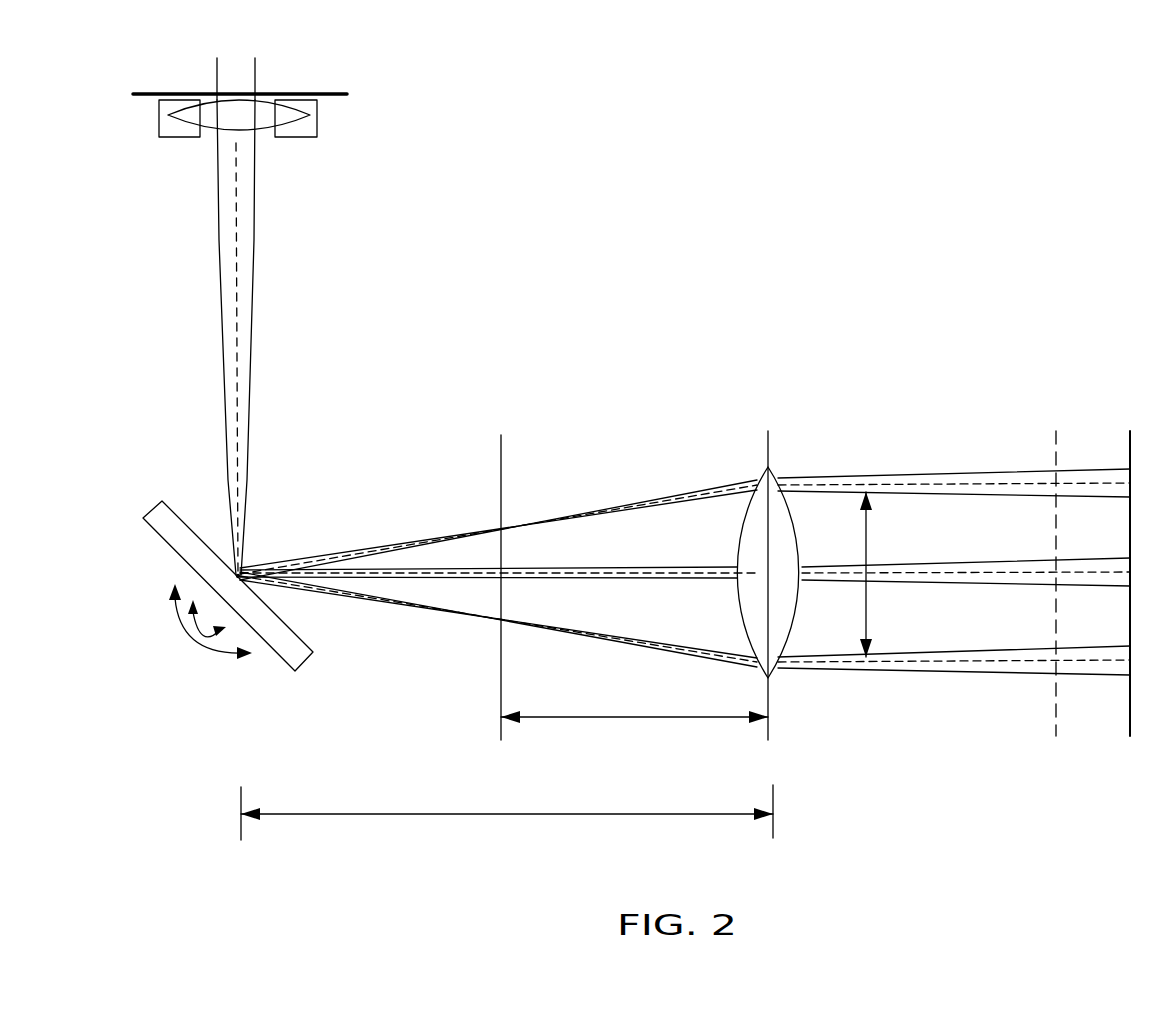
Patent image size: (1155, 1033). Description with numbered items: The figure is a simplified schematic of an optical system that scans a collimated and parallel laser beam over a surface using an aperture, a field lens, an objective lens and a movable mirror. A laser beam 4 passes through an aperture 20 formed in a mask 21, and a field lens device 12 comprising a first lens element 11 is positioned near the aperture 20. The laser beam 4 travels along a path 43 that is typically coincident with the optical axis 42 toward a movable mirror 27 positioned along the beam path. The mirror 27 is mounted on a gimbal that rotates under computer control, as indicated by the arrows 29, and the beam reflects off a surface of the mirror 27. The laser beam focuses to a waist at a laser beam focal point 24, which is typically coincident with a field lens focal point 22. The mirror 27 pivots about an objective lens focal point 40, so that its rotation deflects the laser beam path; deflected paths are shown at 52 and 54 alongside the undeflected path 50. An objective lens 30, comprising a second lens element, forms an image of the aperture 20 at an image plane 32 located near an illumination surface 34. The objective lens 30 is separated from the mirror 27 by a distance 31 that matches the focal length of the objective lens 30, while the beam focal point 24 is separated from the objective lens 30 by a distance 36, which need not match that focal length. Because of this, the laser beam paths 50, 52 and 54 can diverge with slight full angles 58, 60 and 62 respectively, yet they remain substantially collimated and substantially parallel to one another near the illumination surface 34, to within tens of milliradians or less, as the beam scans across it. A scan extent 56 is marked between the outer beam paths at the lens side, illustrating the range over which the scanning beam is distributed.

The laser beam 4 is at (245, 75).
The first lens element 11 is at (193, 112).
The field lens device 12 is at (312, 125).
The aperture 20 is at (232, 93).
The mask 21 is at (142, 97).
The field lens focal point 22 is at (500, 574).
The laser beam focal point 24 is at (501, 573).
The movable mirror 27 is at (282, 643).
The arrows 29 is at (173, 625).
The objective lens 30 is at (768, 508).
The distance 31 is at (473, 815).
The image plane 32 is at (1056, 705).
The illumination surface 34 is at (1130, 712).
The distance 36 is at (650, 718).
The objective lens focal point 40 is at (237, 578).
The optical axis 42 is at (237, 228).
The path 43 is at (223, 213).
The laser beam path 50 is at (1087, 572).
The deflected laser beam path 52 is at (1087, 483).
The deflected laser beam path 54 is at (1088, 660).
The scan width 56 is at (863, 532).
The full angle 58 is at (995, 570).
The full angle 60 is at (978, 480).
The full angle 62 is at (997, 667).